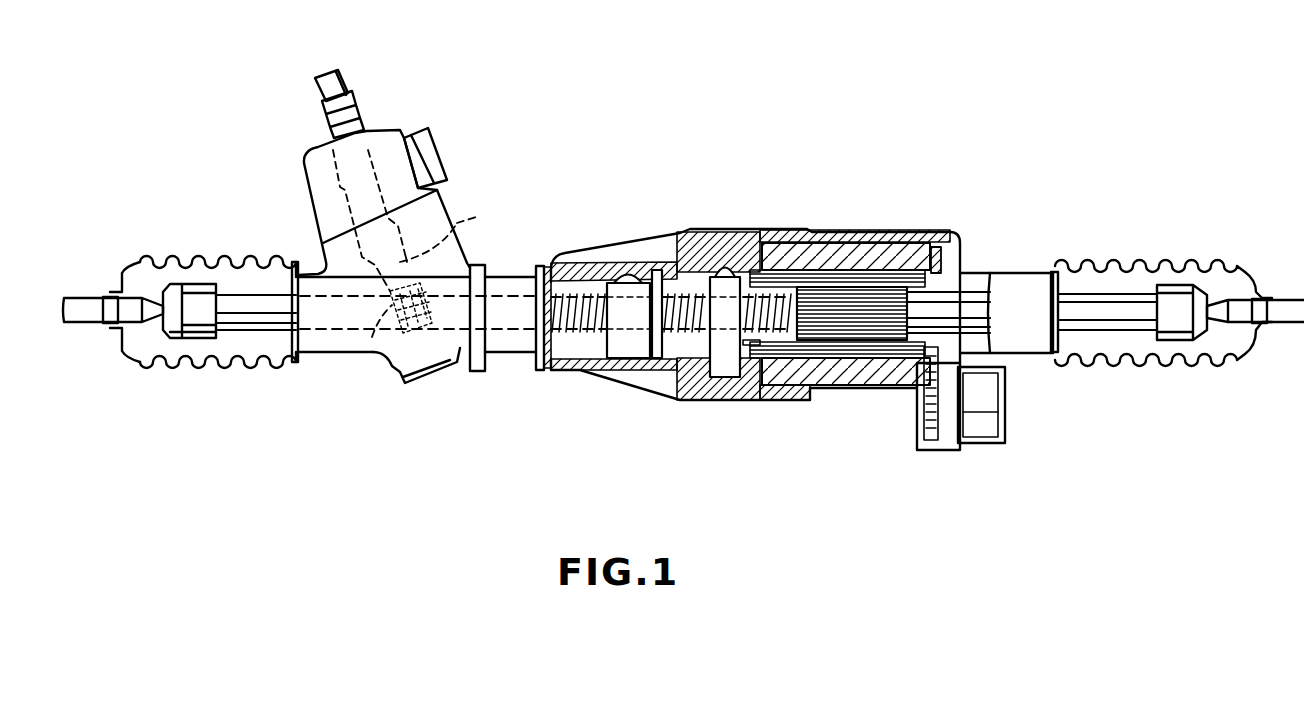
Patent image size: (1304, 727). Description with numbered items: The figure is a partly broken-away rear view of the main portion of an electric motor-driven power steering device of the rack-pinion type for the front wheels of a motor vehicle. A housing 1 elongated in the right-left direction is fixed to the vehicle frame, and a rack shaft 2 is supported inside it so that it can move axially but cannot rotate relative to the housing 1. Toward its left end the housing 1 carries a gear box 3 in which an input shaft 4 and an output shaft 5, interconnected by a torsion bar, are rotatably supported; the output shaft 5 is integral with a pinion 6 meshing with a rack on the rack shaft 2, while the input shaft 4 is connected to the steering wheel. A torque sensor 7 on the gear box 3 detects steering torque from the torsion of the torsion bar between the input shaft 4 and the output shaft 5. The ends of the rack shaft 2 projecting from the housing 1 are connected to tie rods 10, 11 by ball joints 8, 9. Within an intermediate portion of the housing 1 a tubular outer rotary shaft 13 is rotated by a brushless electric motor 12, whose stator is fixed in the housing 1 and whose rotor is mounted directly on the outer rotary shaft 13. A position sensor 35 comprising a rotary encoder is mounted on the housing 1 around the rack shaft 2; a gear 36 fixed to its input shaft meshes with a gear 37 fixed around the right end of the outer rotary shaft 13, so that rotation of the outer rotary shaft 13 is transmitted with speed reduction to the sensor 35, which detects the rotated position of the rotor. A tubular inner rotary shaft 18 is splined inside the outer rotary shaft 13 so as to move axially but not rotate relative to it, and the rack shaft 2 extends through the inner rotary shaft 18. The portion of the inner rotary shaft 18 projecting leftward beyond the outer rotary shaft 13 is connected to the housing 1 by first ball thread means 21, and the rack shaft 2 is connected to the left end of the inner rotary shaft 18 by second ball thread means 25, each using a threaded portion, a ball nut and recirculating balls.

The housing 1 is at (707, 230).
The rack shaft 2 is at (1085, 322).
The gear box 3 is at (450, 210).
The input shaft 4 is at (343, 73).
The output shaft 5 is at (476, 209).
The pinion 6 is at (372, 337).
The torque sensor 7 is at (445, 140).
The ball joint 8 is at (218, 336).
The ball joint 9 is at (1153, 338).
The tie rod 10 is at (87, 327).
The tie rod 11 is at (1287, 330).
The brushless electric motor 12 is at (852, 232).
The outer rotary shaft 13 is at (760, 392).
The inner rotary shaft 18 is at (870, 388).
The first ball thread means 21 is at (703, 343).
The second ball thread means 25 is at (602, 281).
The position sensor 35 is at (982, 447).
The gear 36 is at (930, 450).
The gear 37 is at (938, 232).